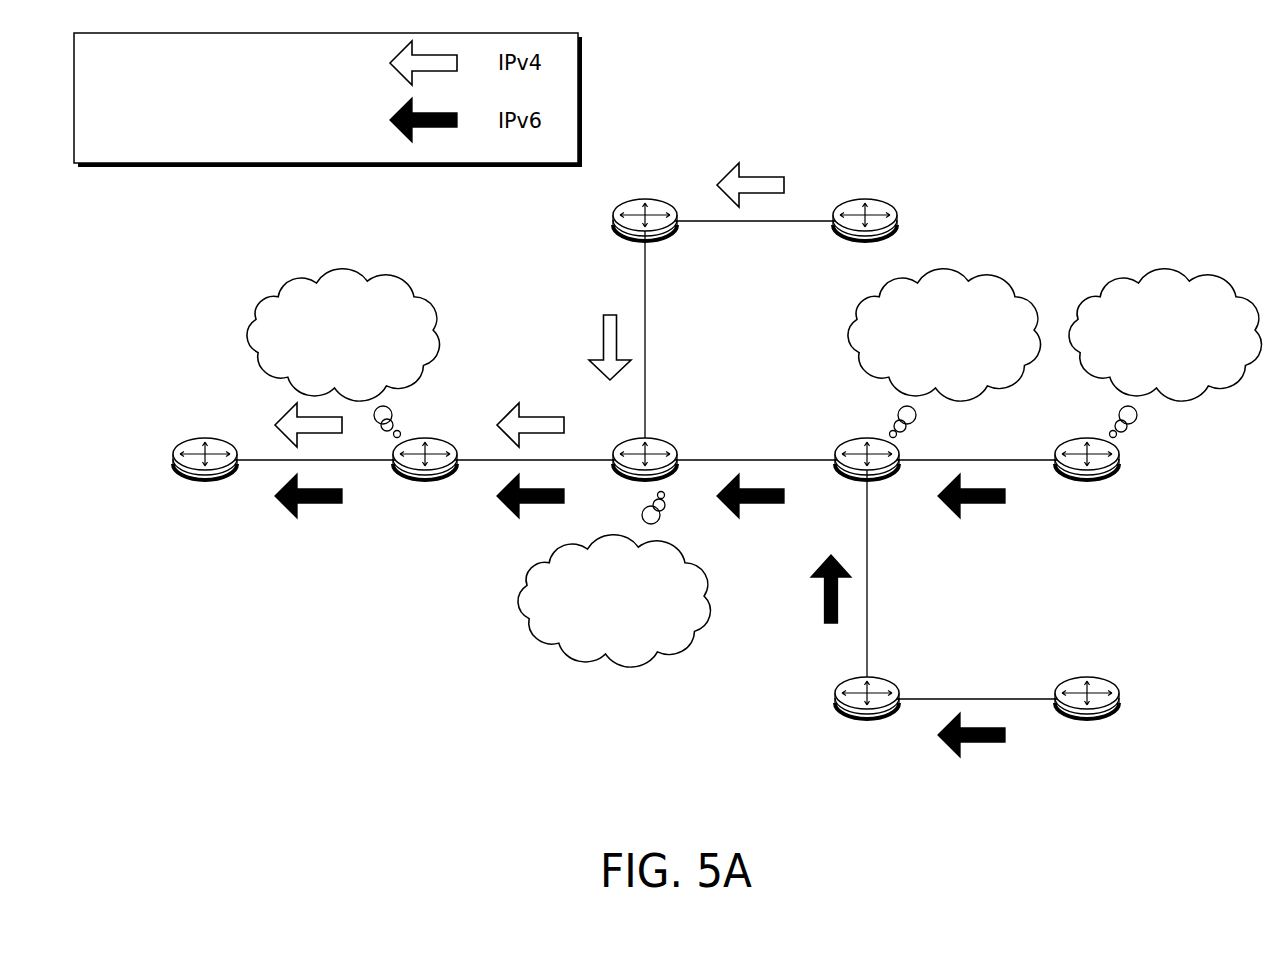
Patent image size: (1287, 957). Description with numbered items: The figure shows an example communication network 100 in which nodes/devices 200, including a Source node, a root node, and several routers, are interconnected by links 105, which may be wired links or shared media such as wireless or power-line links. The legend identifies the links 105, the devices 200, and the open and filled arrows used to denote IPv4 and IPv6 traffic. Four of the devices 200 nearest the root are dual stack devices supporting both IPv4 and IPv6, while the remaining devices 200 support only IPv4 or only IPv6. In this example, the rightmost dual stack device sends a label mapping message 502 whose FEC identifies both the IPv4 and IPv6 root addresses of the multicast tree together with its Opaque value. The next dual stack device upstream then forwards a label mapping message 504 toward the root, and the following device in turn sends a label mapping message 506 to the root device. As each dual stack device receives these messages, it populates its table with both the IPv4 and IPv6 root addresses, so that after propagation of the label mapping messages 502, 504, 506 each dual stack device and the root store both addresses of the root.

The communication network 100 is at (1189, 88).
The links 105 is at (108, 63).
The nodes/devices 200 is at (618, 410).
The label mapping message 502 is at (939, 426).
The label mapping message 504 is at (719, 427).
The label mapping message 506 is at (479, 373).